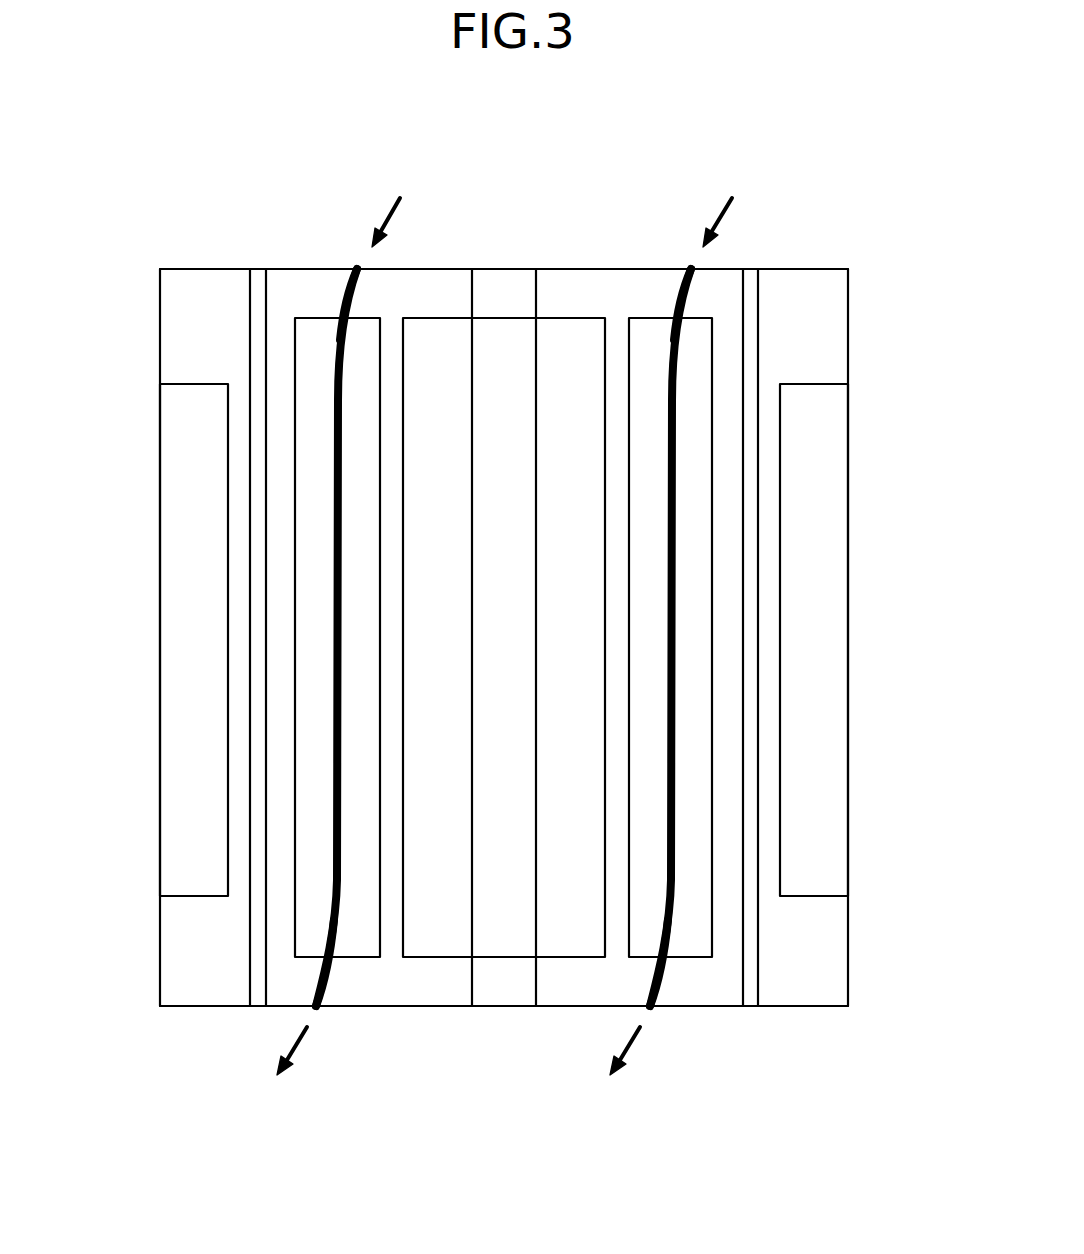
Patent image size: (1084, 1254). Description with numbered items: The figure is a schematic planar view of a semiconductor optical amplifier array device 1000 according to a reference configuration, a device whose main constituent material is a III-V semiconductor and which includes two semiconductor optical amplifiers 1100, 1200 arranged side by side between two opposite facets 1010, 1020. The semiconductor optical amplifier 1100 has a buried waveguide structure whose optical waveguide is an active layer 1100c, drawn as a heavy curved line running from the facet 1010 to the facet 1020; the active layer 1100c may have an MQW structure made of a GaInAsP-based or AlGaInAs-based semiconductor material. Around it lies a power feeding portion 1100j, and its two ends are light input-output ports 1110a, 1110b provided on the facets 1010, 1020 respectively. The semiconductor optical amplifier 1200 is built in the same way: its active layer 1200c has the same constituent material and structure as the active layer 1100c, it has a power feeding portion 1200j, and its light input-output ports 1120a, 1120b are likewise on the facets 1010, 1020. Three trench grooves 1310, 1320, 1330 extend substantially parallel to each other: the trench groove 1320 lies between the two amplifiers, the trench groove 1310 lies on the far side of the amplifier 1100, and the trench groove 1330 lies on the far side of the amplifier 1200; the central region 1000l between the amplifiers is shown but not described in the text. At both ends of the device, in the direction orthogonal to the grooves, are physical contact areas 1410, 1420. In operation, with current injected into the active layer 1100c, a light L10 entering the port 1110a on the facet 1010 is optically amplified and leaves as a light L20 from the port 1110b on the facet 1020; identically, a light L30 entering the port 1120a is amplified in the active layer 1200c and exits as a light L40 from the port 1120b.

The semiconductor optical amplifier array device 1000 is at (865, 240).
The facet 1010 is at (296, 268).
The facet 1020 is at (810, 1006).
The central region 1000l is at (565, 952).
The semiconductor optical amplifier 1100 is at (266, 640).
The active layer 1100c is at (340, 348).
The power feeding portion 1100j is at (312, 912).
The light input-output port 1110a is at (359, 269).
The light input-output port 1110b is at (316, 1006).
The semiconductor optical amplifier 1200 is at (789, 611).
The active layer 1200c is at (672, 348).
The power feeding portion 1200j is at (695, 913).
The light input-output port 1120a is at (693, 269).
The light input-output port 1120b is at (650, 1006).
The trench groove 1310 is at (258, 283).
The trench groove 1320 is at (498, 283).
The trench groove 1330 is at (755, 292).
The physical contact area 1410 is at (175, 602).
The physical contact area 1420 is at (823, 602).
The light L10 is at (383, 214).
The light L20 is at (300, 1043).
The light L30 is at (720, 214).
The light L40 is at (632, 1043).